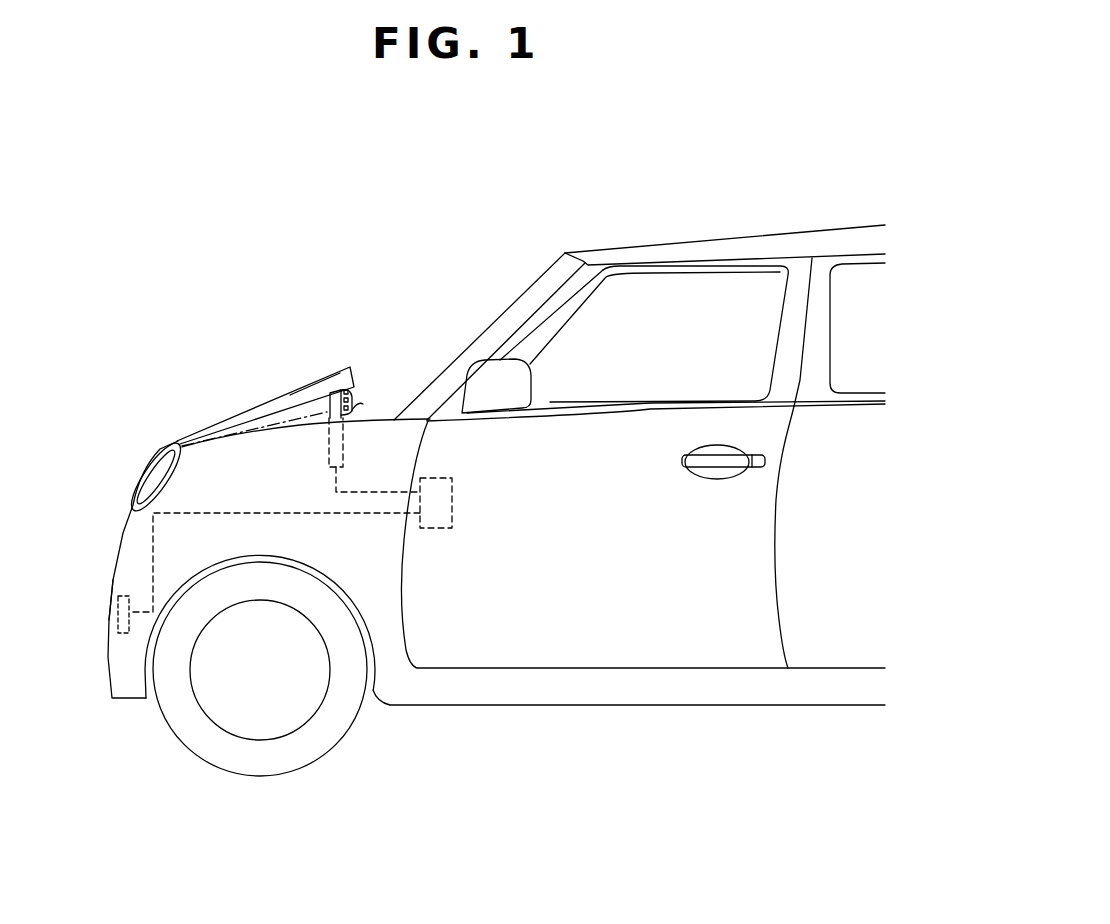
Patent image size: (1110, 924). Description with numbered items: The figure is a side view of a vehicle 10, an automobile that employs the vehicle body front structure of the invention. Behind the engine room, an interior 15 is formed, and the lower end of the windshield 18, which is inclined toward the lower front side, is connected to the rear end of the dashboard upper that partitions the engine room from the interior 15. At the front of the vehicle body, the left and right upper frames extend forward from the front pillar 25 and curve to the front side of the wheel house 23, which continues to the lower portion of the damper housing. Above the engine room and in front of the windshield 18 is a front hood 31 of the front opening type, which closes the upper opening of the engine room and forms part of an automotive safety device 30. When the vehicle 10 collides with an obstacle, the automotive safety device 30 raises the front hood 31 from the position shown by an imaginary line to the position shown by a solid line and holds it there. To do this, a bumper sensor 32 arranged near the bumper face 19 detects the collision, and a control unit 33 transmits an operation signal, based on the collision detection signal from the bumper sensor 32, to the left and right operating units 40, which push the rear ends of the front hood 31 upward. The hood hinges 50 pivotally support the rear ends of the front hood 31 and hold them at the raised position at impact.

The vehicle 10 is at (303, 194).
The interior 15 is at (688, 349).
The windshield 18 is at (453, 332).
The bumper face 19 is at (118, 573).
The wheel house 23 is at (148, 652).
The front pillar 25 is at (521, 323).
The automotive safety device 30 is at (351, 362).
The front hood 31 is at (337, 370).
The bumper sensor 32 is at (112, 615).
The control unit 33 is at (452, 500).
The operating unit 40 is at (325, 453).
The hood hinge 50 is at (359, 409).